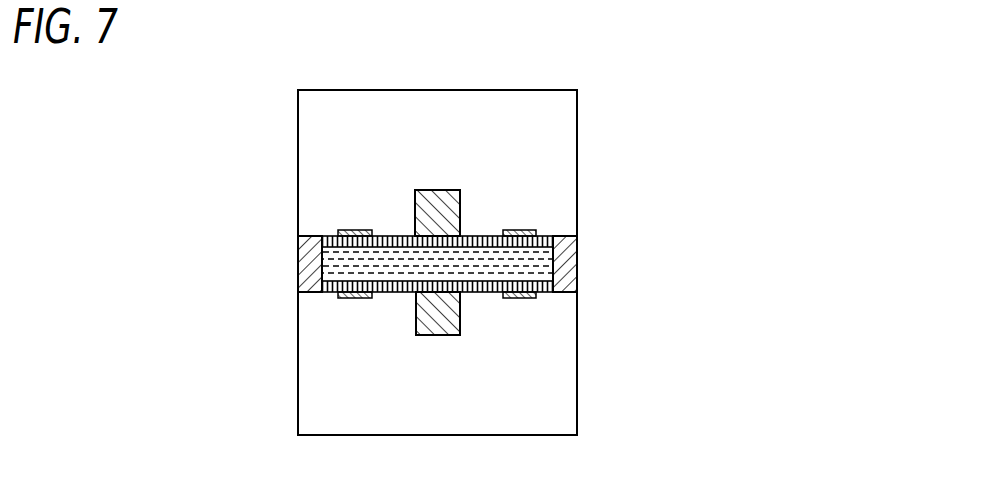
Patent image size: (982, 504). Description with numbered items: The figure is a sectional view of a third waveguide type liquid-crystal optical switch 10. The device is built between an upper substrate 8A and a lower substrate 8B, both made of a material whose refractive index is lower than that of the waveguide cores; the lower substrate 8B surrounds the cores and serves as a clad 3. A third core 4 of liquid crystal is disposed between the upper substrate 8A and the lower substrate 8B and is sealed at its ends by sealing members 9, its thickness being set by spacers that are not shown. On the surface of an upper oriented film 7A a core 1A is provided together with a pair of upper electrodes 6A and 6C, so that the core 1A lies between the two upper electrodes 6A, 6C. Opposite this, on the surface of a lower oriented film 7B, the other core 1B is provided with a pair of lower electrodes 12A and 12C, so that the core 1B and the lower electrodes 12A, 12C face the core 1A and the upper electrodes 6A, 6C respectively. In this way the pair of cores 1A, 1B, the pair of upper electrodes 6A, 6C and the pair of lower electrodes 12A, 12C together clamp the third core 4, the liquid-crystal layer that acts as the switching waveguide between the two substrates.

The third waveguide type liquid-crystal optical switch 10 is at (617, 83).
The upper substrate 8A is at (534, 107).
The lower substrate 8B is at (569, 425).
The clad 3 is at (310, 427).
The third core 4 is at (298, 262).
The sealing member 9 is at (566, 262).
The core 1A is at (438, 190).
The core 1B is at (437, 335).
The upper oriented film 7A is at (478, 236).
The lower oriented film 7B is at (480, 292).
The upper electrode 6A is at (354, 230).
The upper electrode 6C is at (519, 230).
The lower electrode 12A is at (355, 298).
The lower electrode 12C is at (521, 298).